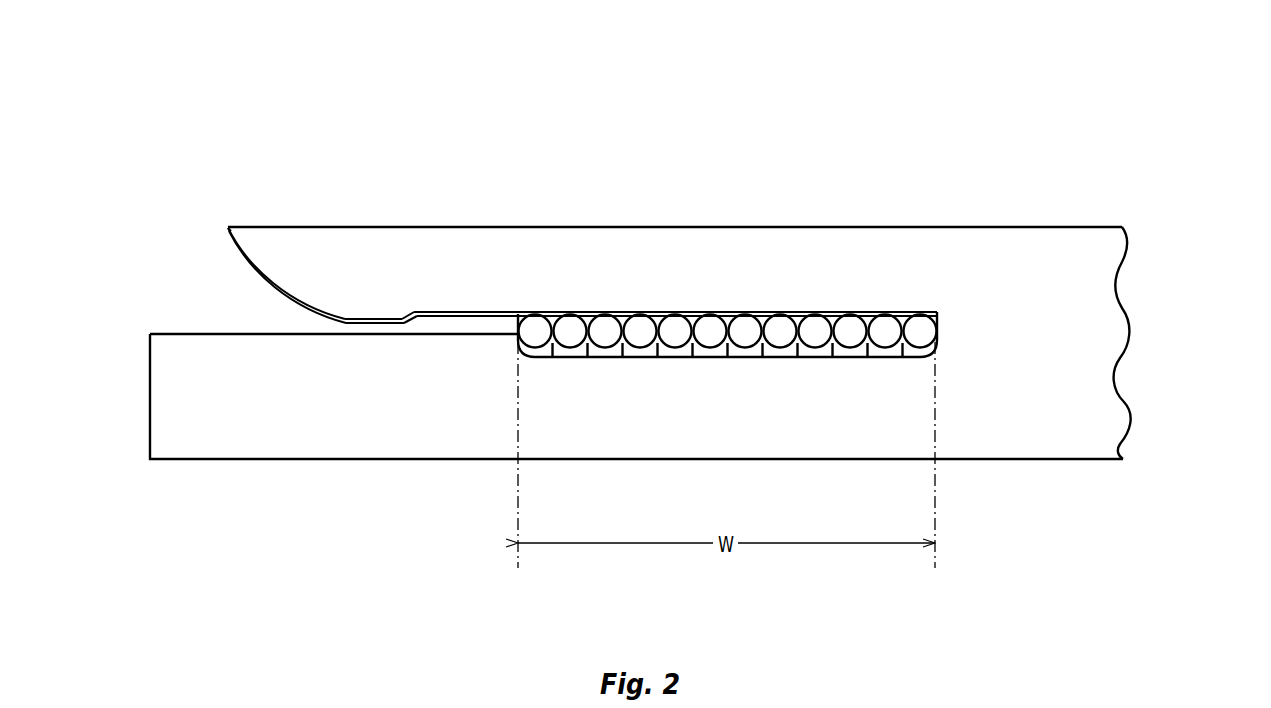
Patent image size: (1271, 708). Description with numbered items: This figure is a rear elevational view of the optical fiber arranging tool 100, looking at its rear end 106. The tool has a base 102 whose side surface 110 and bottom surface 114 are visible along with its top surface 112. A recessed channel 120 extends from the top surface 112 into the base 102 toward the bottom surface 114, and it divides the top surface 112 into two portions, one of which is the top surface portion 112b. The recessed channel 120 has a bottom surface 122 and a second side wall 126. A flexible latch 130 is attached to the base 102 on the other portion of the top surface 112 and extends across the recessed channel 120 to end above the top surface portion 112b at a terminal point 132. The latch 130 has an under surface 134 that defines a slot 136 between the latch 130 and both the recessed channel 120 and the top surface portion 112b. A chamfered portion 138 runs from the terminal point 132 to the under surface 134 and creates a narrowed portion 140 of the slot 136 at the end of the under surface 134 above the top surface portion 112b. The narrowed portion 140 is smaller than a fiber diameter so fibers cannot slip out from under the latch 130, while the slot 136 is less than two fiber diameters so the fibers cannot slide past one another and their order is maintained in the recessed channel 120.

The optical fiber arranging tool 100 is at (1086, 130).
The base 102 is at (1148, 257).
The rear end 106 is at (233, 443).
The side surface 110 is at (150, 397).
The top surface 112 is at (162, 334).
The second portion of top surface 112b is at (213, 334).
The bottom surface 114 is at (1032, 460).
The recessed channel 120 is at (722, 360).
The bottom surface of recessed channel 122 is at (618, 360).
The second side wall 126 is at (518, 340).
The latch 130 is at (643, 227).
The terminal point 132 is at (228, 227).
The under surface 134 is at (430, 318).
The slot 136 is at (488, 323).
The chamfered portion 138 is at (273, 292).
The narrowed portion 140 is at (346, 323).